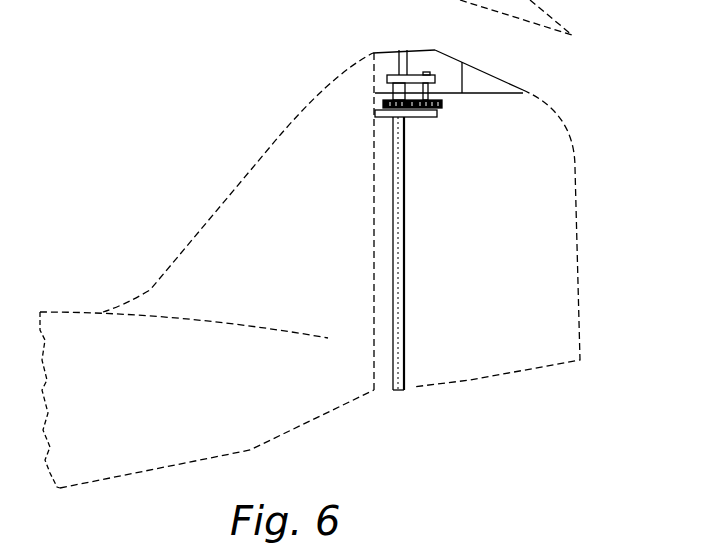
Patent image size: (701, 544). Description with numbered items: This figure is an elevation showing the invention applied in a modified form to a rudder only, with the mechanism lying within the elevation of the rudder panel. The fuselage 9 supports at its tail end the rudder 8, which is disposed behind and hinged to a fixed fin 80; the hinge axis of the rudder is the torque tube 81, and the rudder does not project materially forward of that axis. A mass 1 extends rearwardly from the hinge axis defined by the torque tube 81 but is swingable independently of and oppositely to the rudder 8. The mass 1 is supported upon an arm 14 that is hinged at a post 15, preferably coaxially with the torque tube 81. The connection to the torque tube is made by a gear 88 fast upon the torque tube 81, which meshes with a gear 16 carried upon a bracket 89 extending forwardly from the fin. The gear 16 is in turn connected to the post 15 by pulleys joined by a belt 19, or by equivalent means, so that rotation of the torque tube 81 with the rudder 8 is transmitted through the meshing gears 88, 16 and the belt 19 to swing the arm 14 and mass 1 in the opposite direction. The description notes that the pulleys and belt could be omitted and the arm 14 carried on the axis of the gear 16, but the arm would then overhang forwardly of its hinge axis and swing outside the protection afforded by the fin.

The mass 1 is at (490, 83).
The rudder 8 is at (575, 168).
The fuselage 9 is at (60, 312).
The arm 14 is at (427, 58).
The post 15 is at (398, 63).
The gear 16 is at (440, 104).
The belt 19 is at (412, 78).
The fixed fin 80 is at (278, 133).
The torque tube 81 is at (400, 268).
The gear 88 is at (382, 105).
The bracket 89 is at (413, 117).